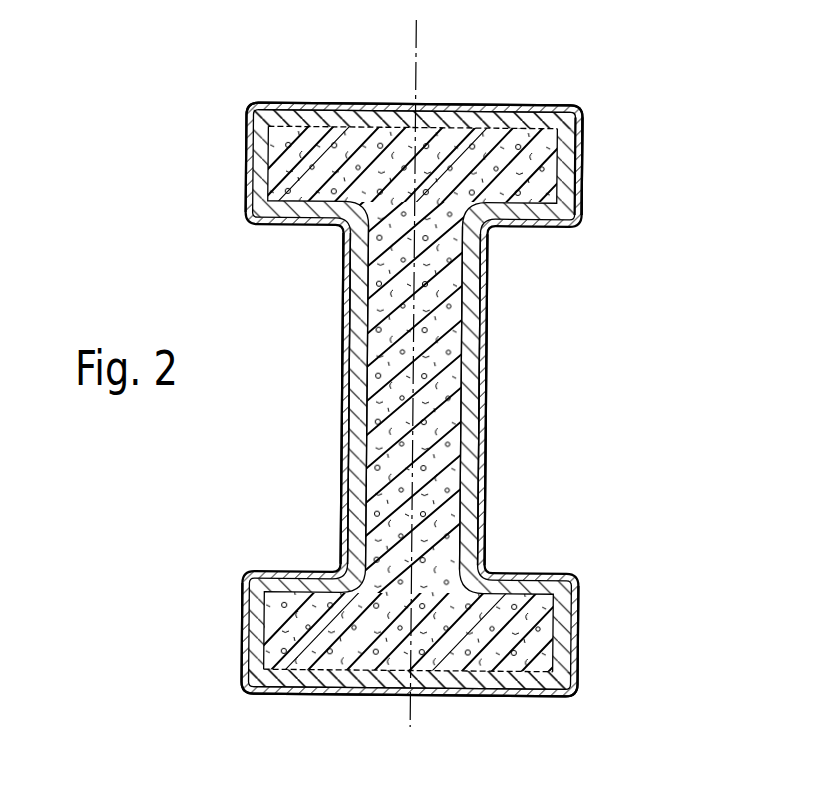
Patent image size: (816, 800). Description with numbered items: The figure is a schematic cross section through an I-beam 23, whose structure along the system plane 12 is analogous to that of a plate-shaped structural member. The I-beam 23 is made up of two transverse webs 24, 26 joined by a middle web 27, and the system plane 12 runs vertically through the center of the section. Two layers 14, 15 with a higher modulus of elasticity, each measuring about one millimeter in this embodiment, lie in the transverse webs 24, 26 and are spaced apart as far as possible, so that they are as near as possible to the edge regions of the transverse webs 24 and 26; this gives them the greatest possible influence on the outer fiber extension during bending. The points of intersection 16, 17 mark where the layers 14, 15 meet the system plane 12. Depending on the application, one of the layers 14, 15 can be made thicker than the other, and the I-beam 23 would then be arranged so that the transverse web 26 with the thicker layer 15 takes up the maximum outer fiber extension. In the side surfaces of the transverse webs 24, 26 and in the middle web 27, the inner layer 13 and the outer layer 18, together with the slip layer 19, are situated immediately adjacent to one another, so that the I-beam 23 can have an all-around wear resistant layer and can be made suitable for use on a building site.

The system plane 12 is at (418, 51).
The inner layer 13 is at (447, 503).
The layer 14 is at (312, 110).
The layer 15 is at (514, 692).
The point of intersection 16 is at (403, 108).
The point of intersection 17 is at (392, 697).
The outer layer 18 is at (477, 449).
The slip layer 19 is at (486, 407).
The I-beam 23 is at (511, 98).
The transverse web 24 is at (595, 162).
The transverse web 26 is at (597, 636).
The middle web 27 is at (536, 334).